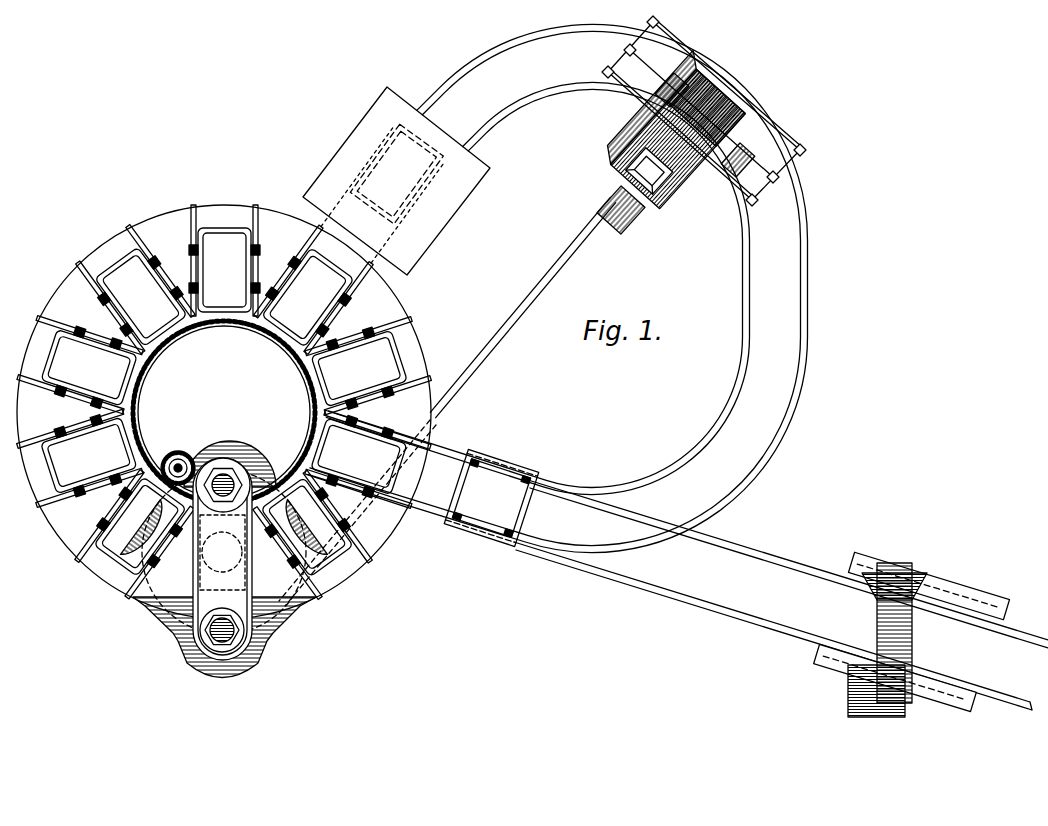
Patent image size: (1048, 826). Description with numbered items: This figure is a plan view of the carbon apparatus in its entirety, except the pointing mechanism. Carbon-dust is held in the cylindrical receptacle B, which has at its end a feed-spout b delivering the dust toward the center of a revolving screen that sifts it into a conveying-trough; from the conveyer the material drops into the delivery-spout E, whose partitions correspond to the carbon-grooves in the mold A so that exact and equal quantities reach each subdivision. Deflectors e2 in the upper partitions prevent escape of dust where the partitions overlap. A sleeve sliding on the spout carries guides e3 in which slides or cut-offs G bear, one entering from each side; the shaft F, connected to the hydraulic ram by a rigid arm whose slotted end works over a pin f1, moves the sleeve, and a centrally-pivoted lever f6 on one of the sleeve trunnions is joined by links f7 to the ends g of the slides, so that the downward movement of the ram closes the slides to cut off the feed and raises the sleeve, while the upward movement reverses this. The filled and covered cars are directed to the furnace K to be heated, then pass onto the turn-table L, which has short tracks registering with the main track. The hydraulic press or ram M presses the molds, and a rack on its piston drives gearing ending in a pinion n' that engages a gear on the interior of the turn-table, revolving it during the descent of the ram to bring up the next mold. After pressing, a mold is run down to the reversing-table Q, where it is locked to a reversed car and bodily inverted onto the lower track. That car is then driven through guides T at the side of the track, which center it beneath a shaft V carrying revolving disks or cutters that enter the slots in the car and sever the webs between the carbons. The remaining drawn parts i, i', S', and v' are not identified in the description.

The mold A is at (100, 366).
The cylindrical receptacle B is at (640, 140).
The delivery-spout E is at (722, 80).
The shaft F is at (482, 358).
The slides or cut-offs G is at (672, 86).
The ends of the slides g is at (738, 157).
The furnace K is at (396, 181).
The turn-table L is at (735, 396).
The hydraulic press or ram M is at (160, 585).
The reversing-table Q is at (512, 465).
The guides T is at (835, 674).
The shaft V is at (865, 612).
The spool collar v' is at (903, 673).
The rods S' is at (781, 595).
The feed-spout b is at (672, 188).
The deflectors e2 is at (722, 176).
The guides e3 is at (758, 118).
The pin f1 is at (640, 96).
The centrally-pivoted lever f6 is at (738, 98).
The links f7 is at (785, 140).
The chambers i is at (231, 361).
The ring gear i' is at (224, 412).
The pinion n' is at (182, 451).